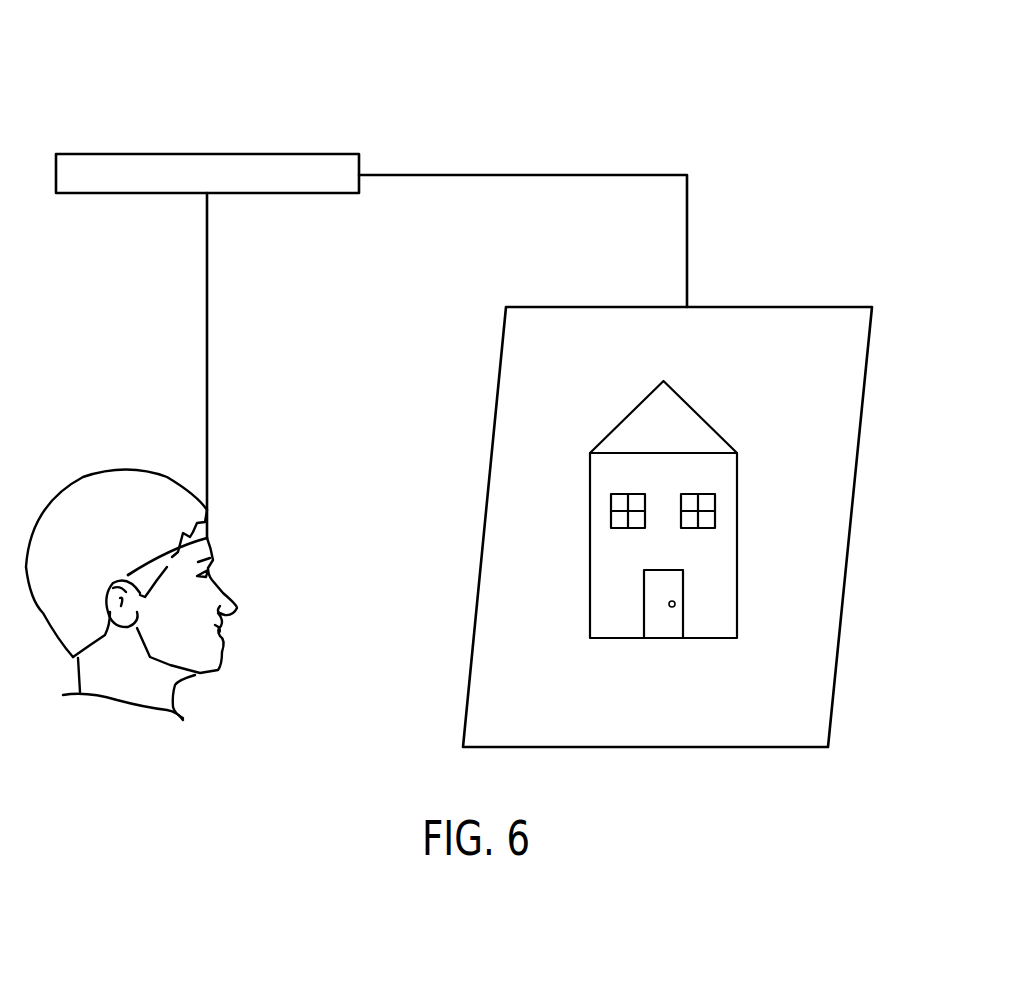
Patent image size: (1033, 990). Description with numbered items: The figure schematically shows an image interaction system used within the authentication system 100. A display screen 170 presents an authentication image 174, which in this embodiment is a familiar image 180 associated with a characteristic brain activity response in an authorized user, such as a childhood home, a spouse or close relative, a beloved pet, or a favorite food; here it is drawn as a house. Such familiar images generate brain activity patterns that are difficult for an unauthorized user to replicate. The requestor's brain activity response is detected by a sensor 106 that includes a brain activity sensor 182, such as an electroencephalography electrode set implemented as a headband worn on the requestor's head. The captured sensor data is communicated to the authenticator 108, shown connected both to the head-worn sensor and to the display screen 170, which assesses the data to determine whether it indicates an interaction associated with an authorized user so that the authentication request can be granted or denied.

The authentication system 100 is at (714, 116).
The authenticator 108 is at (207, 154).
The sensor 106 is at (129, 486).
The brain activity sensor 182 is at (148, 565).
The display screen 170 is at (735, 748).
The authentication image 174 is at (554, 504).
The familiar image 180 is at (625, 414).